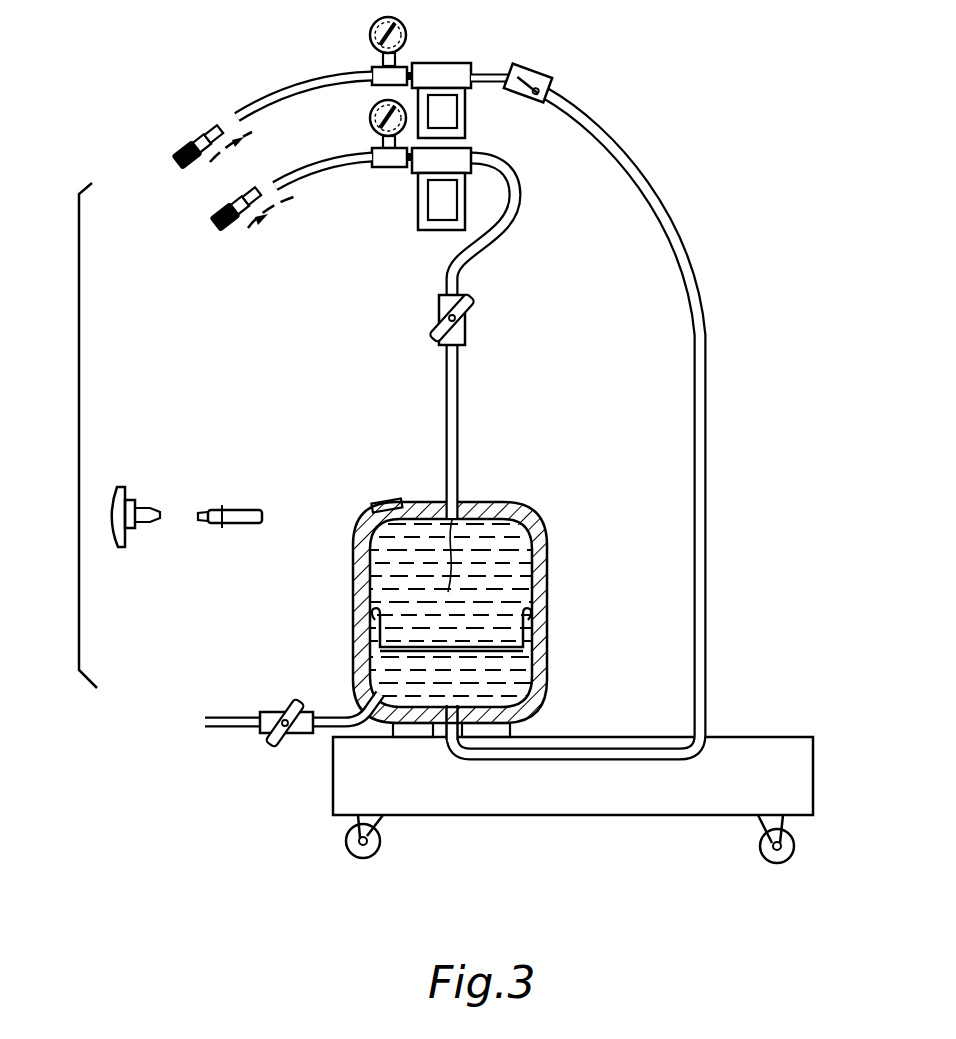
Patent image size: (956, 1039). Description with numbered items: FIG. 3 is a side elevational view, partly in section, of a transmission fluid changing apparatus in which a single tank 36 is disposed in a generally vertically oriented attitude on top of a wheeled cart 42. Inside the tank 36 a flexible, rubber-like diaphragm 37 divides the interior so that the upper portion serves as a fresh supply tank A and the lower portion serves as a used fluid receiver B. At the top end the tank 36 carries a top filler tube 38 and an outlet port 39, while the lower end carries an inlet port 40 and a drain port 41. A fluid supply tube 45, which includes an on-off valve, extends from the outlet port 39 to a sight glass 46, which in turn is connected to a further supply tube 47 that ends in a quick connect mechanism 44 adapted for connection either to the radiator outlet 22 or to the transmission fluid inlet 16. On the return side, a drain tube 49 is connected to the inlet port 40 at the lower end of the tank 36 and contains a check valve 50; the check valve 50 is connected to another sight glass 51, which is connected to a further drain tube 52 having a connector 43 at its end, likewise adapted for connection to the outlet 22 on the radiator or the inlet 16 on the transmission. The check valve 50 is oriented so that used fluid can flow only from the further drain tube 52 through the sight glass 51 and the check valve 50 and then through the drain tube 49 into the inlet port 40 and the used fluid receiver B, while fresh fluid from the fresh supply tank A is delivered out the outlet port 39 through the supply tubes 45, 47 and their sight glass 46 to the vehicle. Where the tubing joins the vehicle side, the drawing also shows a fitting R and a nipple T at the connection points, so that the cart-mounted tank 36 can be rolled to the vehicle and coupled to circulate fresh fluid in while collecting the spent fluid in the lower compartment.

The fluid inlet 16 is at (243, 508).
The outlet 22 is at (120, 490).
The tank 36 is at (547, 537).
The diaphragm 37 is at (470, 643).
The top filler tube 38 is at (381, 500).
The outlet port 39 is at (462, 500).
The inlet port 40 is at (452, 702).
The drain port 41 is at (327, 697).
The wheeled cart 42 is at (545, 815).
The connector 43 is at (178, 166).
The quick connect mechanism 44 is at (222, 226).
The fluid supply tube 45 is at (464, 360).
The sight glass 46 is at (420, 208).
The further supply tube 47 is at (315, 183).
The drain tube 49 is at (707, 482).
The check valve 50 is at (540, 70).
The sight glass 51 is at (450, 74).
The further drain tube 52 is at (303, 87).
The fresh supply tank A is at (497, 593).
The used fluid receiver B is at (503, 697).
The fitting R is at (127, 533).
The nipple T is at (265, 524).